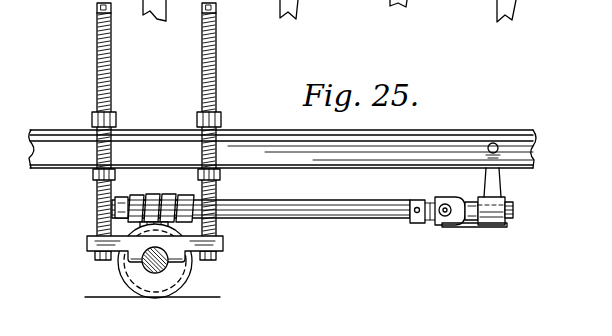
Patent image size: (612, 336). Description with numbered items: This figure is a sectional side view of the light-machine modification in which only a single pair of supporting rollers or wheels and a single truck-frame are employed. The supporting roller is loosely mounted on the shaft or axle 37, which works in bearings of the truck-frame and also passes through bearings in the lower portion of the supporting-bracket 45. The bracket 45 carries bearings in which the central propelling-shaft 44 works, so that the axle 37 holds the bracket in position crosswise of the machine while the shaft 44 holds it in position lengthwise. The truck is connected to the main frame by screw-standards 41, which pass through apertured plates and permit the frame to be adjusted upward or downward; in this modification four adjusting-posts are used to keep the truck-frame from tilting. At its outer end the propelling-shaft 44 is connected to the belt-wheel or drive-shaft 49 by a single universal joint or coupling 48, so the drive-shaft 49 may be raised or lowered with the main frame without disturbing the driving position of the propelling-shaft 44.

The shaft or axle 37 is at (152, 271).
The screw-standard 41 is at (203, 76).
The central propelling-shaft 44 is at (319, 216).
The supporting-bracket 45 is at (182, 224).
The universal joint 48 is at (450, 224).
The belt-wheel shaft 49 is at (511, 220).